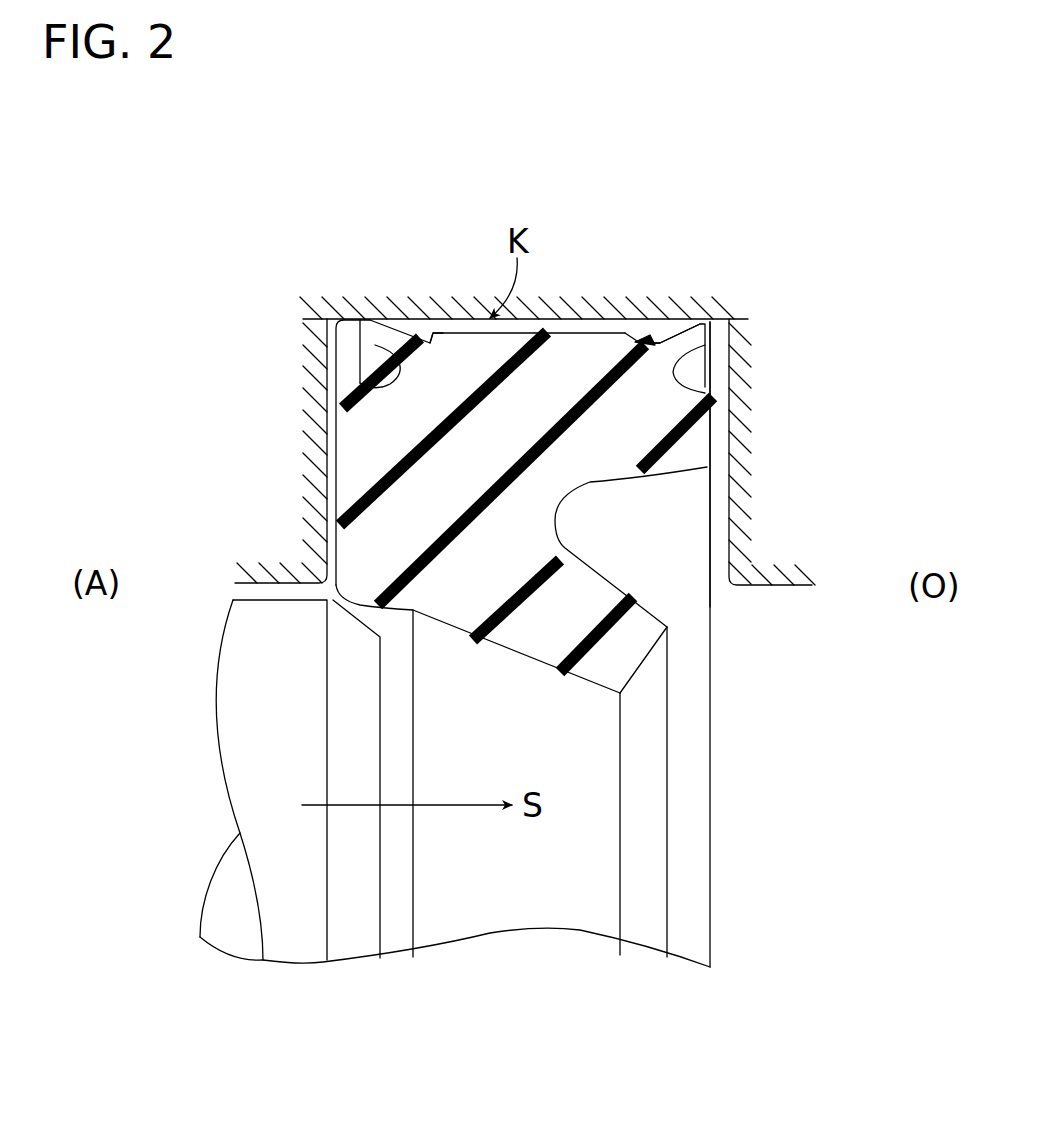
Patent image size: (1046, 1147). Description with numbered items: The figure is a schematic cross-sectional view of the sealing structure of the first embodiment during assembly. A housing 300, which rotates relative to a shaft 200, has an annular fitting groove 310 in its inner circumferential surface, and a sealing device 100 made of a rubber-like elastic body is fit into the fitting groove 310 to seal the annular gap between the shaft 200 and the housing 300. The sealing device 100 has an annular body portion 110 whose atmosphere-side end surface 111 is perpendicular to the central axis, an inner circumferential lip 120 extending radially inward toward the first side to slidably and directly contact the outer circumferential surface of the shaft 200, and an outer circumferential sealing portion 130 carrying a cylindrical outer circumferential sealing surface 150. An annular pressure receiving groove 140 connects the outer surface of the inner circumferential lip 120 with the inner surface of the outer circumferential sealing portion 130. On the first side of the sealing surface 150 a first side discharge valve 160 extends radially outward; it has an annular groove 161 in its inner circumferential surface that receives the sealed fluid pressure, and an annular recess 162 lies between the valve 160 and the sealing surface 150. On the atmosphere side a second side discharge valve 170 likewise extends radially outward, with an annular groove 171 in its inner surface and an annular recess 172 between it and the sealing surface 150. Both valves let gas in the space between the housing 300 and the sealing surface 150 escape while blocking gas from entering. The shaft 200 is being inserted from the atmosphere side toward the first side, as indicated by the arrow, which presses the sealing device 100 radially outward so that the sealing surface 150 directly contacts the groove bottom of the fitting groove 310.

The sealing device 100 is at (768, 664).
The body portion 110 is at (375, 482).
The end surface 111 is at (335, 435).
The inner circumferential lip 120 is at (620, 668).
The outer circumferential sealing portion 130 is at (692, 447).
The pressure receiving groove 140 is at (555, 520).
The outer circumferential sealing surface 150 is at (565, 331).
The first side discharge valve 160 is at (830, 288).
The annular groove 161 is at (700, 378).
The annular recess 162 is at (658, 343).
The second side discharge valve 170 is at (343, 328).
The annular groove 171 is at (397, 370).
The annular recess 172 is at (437, 330).
The shaft 200 is at (232, 745).
The housing 300 is at (564, 441).
The fitting groove 310 is at (733, 487).